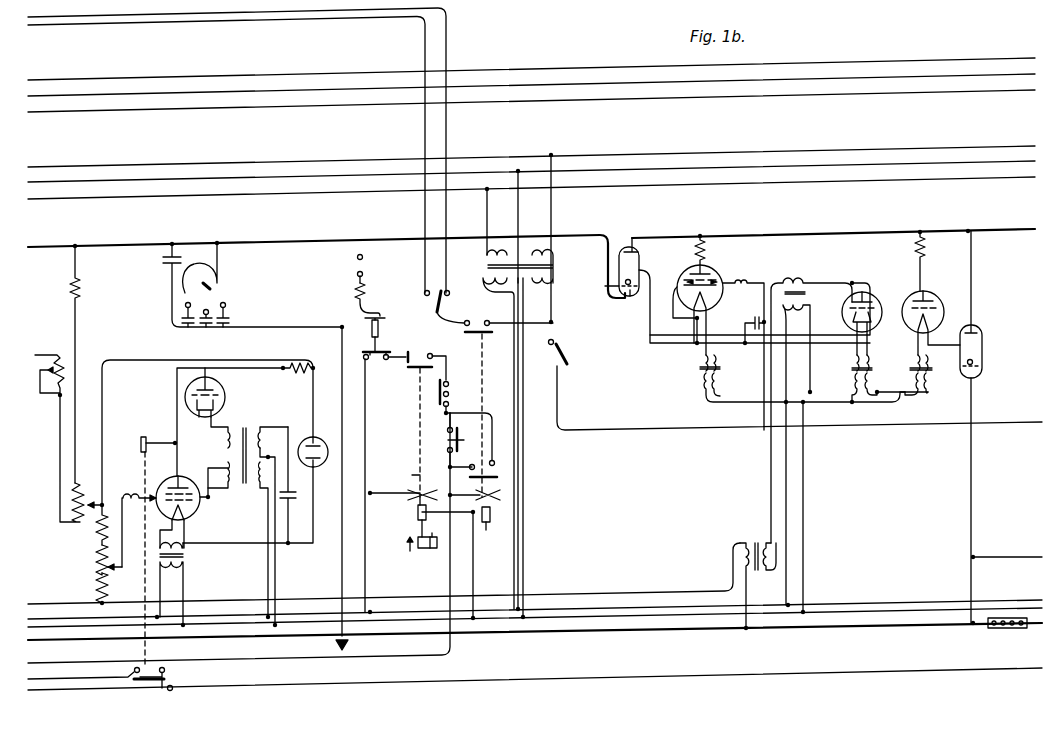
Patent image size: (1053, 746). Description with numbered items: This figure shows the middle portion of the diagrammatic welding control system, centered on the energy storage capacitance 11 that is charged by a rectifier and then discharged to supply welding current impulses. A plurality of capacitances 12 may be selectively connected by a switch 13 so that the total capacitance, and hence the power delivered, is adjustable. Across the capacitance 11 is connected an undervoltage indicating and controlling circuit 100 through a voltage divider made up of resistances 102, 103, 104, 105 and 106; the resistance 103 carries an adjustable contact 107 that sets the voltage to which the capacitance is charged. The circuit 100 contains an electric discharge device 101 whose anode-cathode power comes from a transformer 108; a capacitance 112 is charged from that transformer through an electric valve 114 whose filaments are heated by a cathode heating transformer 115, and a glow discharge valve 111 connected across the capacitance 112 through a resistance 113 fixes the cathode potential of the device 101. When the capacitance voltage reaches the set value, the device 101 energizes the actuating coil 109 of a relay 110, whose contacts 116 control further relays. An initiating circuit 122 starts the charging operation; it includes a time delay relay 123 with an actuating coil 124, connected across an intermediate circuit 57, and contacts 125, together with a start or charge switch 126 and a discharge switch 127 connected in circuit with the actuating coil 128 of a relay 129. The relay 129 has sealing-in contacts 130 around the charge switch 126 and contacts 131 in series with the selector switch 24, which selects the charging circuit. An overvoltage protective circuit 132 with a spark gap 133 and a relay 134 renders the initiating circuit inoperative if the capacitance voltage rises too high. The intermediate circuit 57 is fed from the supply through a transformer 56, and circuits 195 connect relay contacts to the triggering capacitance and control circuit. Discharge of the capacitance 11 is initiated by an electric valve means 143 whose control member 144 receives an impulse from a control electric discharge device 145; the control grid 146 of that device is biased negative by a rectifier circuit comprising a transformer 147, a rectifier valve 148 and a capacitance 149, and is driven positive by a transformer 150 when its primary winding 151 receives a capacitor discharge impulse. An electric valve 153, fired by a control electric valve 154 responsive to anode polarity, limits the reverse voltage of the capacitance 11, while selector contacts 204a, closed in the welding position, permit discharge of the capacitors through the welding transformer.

The circuits 195 is at (566, 98).
The resistance 102 is at (78, 292).
The capacitance 11 is at (162, 262).
The switch 13 is at (200, 268).
The capacitances 12 is at (180, 320).
The undervoltage indicating and controlling circuit 100 is at (207, 451).
The electric valve 114 is at (222, 393).
The resistance 113 is at (300, 374).
The glow discharge valve 111 is at (305, 440).
The actuating coil 109 is at (140, 437).
The relay 110 is at (126, 492).
The electric discharge device 101 is at (168, 484).
The cathode heating transformer 115 is at (240, 435).
The transformer 108 is at (250, 487).
The capacitance 112 is at (292, 500).
The resistance 103 is at (78, 485).
The adjustable contact 107 is at (90, 503).
The resistance 104 is at (98, 530).
The resistance 105 is at (98, 562).
The resistance 106 is at (104, 597).
The contacts 116 is at (168, 676).
The spark gap 133 is at (357, 259).
The overvoltage protective circuit 132 is at (354, 299).
The relay 134 is at (380, 348).
The selector switch 24 is at (435, 306).
The contacts 131 is at (470, 320).
The transformer 56 is at (553, 268).
The contacts 125 is at (430, 353).
The discharge switch 127 is at (450, 390).
The contacts 204a is at (568, 358).
The initiating circuit 122 is at (394, 459).
The start or charge switch 126 is at (447, 436).
The sealing-in contacts 130 is at (494, 460).
The time delay relay 123 is at (403, 476).
The actuating coil 124 is at (414, 510).
The actuating coil 128 is at (500, 496).
The relay 129 is at (497, 529).
The intermediate circuit 57 is at (766, 429).
The electric valve means 143 is at (641, 272).
The control member 144 is at (598, 288).
The control electric discharge device 145 is at (705, 267).
The control grid 146 is at (733, 280).
The transformer 147 is at (812, 282).
The rectifier valve 148 is at (846, 304).
The capacitance 149 is at (752, 318).
The transformer 150 is at (752, 545).
The primary winding 151 is at (740, 557).
The electric valve 153 is at (980, 332).
The control electric valve 154 is at (924, 292).